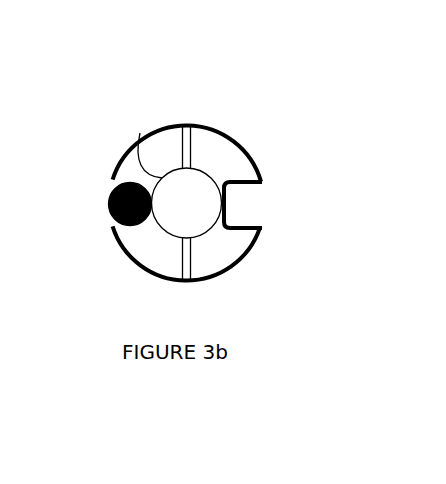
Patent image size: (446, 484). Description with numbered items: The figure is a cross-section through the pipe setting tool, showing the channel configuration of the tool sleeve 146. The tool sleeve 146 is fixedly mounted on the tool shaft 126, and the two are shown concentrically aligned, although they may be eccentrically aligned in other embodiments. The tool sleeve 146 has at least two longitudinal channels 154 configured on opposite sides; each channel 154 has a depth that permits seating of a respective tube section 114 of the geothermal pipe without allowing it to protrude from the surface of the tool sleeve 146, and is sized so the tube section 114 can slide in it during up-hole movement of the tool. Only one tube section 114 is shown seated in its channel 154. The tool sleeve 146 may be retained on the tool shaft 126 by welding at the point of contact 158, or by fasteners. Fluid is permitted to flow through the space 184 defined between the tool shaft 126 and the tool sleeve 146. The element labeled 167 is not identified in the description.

The tube section 114 is at (108, 199).
The tool shaft 126 is at (140, 136).
The tool sleeve 146 is at (248, 145).
The longitudinal channel 154 is at (110, 188).
The point of contact 158 is at (223, 204).
The channel / slot 167 is at (193, 140).
The space 184 is at (152, 247).